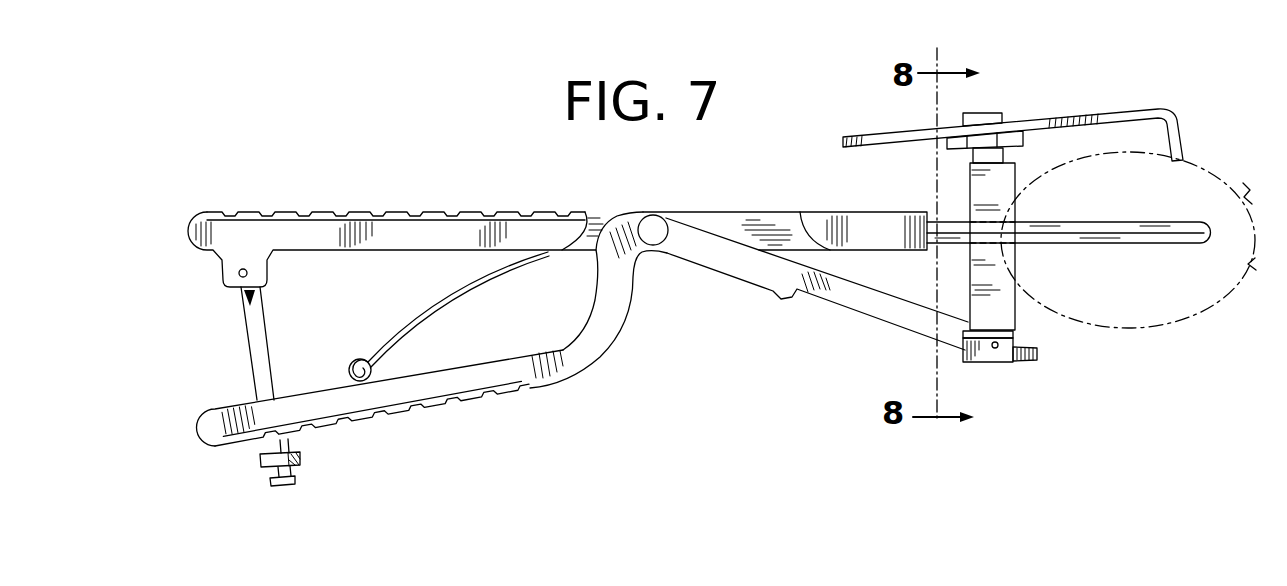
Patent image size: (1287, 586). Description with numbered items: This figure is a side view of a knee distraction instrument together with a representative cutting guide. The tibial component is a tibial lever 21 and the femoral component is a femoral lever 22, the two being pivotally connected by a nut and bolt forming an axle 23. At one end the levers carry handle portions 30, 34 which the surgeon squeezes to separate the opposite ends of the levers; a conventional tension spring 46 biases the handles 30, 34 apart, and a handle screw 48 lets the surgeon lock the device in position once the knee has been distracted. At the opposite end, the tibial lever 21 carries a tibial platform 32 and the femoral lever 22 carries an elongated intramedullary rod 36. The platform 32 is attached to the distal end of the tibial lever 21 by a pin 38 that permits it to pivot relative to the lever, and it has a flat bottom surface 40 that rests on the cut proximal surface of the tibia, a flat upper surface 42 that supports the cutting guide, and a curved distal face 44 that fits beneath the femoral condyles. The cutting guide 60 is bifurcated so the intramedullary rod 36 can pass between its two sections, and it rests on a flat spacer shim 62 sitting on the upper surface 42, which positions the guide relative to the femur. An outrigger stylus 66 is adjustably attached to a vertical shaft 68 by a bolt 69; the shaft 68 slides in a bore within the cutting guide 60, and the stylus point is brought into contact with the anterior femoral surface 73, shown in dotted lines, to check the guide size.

The tibial lever 21 is at (615, 344).
The femoral lever 22 is at (565, 204).
The axle 23 is at (651, 216).
The handle portion 30 is at (477, 382).
The tibial platform 32 is at (955, 356).
The handle portion 34 is at (393, 228).
The intramedullary rod 36 is at (1077, 229).
The pin 38 is at (998, 348).
The flat bottom surface 40 is at (991, 364).
The flat upper surface 42 is at (962, 330).
The curved distal face 44 is at (1016, 326).
The tension spring 46 is at (480, 268).
The handle screw 48 is at (300, 458).
The cutting guide 60 is at (1030, 289).
The spacer shim 62 is at (976, 319).
The outrigger stylus 66 is at (1091, 112).
The vertical shaft 68 is at (977, 158).
The bolt 69 is at (990, 113).
The anterior femoral surface 73 is at (1210, 172).